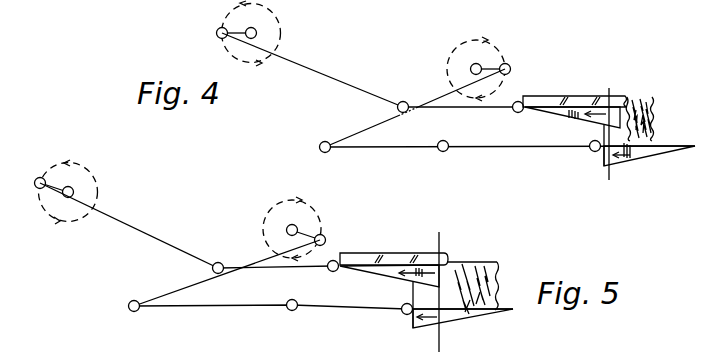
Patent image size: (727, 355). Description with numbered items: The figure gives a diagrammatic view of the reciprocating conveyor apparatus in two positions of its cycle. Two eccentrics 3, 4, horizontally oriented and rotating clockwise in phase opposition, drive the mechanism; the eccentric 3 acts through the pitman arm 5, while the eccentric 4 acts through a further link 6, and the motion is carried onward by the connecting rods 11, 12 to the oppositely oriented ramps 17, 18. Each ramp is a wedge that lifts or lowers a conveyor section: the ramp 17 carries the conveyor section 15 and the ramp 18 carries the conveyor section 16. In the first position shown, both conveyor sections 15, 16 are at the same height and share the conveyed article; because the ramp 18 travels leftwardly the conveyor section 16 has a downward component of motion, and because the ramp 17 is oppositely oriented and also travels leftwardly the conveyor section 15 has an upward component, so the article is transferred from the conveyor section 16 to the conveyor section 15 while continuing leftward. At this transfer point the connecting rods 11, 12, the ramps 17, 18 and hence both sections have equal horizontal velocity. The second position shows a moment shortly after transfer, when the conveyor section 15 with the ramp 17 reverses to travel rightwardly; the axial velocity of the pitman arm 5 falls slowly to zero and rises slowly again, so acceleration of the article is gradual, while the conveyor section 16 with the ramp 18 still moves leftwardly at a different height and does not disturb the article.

In FIG. 4, the eccentric 3 is at (233, 27).
In FIG. 5, the eccentric 3 is at (53, 183).
In FIG. 4, the eccentric 4 is at (500, 63).
In FIG. 5, the eccentric 4 is at (318, 235).
In FIG. 4, the pitman arm 5 is at (300, 66).
In FIG. 5, the pitman arm 5 is at (110, 217).
In FIG. 4, the connecting link 6 is at (446, 93).
In FIG. 5, the connecting link 6 is at (263, 259).
In FIG. 4, the connecting rod 11 is at (473, 109).
In FIG. 5, the connecting rod 11 is at (292, 268).
In FIG. 4, the connecting rod 12 is at (497, 147).
In FIG. 5, the connecting rod 12 is at (332, 310).
In FIG. 4, the conveyor section 15 is at (547, 97).
In FIG. 5, the conveyor section 15 is at (367, 252).
In FIG. 4, the conveyor section 16 is at (636, 100).
In FIG. 5, the conveyor section 16 is at (472, 263).
In FIG. 4, the ramp 17 is at (568, 115).
In FIG. 5, the ramp 17 is at (385, 272).
In FIG. 4, the ramp 18 is at (647, 152).
In FIG. 5, the ramp 18 is at (452, 317).